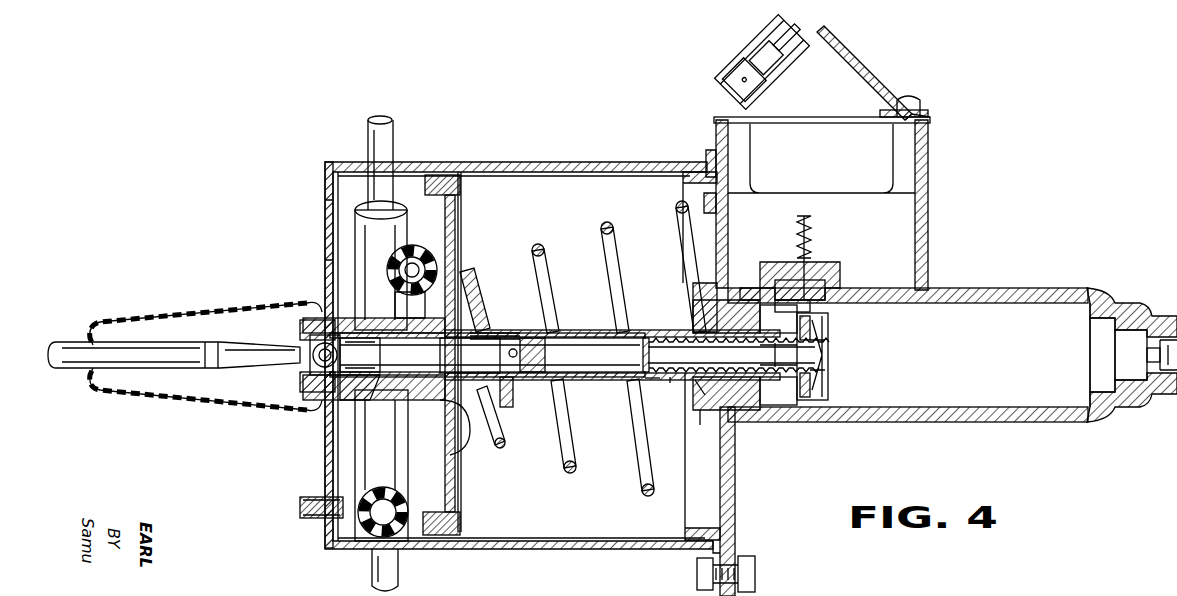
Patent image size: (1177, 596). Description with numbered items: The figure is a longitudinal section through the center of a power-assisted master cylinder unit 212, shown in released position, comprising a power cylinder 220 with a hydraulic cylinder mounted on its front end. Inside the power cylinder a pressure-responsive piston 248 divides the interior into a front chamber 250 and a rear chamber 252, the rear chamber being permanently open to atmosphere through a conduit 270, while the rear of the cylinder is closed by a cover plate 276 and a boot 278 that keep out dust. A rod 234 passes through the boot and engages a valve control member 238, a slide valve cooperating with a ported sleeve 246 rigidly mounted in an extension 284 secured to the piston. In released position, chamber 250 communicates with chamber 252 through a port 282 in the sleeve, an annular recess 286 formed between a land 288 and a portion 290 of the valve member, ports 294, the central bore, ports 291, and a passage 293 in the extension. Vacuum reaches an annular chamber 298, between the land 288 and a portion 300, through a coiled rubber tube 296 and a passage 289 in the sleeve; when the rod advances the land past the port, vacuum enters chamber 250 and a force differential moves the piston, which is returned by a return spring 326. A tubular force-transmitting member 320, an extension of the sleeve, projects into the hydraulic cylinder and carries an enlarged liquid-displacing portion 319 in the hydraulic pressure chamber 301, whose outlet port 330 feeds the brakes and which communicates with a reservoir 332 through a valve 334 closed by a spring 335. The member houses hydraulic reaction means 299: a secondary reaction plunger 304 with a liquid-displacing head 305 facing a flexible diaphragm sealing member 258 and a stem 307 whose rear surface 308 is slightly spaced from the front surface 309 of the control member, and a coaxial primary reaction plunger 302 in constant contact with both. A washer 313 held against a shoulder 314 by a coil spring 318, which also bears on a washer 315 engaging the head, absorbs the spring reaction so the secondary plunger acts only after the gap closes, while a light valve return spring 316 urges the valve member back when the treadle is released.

The power-assisted master cylinder unit 212 is at (560, 554).
The power cylinder 220 is at (535, 165).
The rod 234 is at (68, 352).
The valve control member 238 is at (338, 402).
The ported sleeve 246 is at (345, 430).
The piston 248 is at (462, 195).
The chamber 250 is at (588, 167).
The chamber 252 is at (405, 545).
The flexible diaphragm sealing member 258 is at (820, 336).
The conduit 270 is at (378, 572).
The cover plate 276 is at (325, 222).
The boot 278 is at (197, 318).
The port 282 is at (492, 338).
The extension 284 is at (445, 440).
The annular recess 286 is at (488, 345).
The land 288 is at (495, 332).
The passage 289 is at (440, 462).
The portion 290 is at (535, 382).
The ports 291 is at (372, 312).
The passage 293 is at (340, 395).
The ports 294 is at (520, 385).
The coiled rubber tube 296 is at (365, 240).
The annular chamber 298 is at (480, 328).
The hydraulic reaction means 299 is at (735, 330).
The portion 300 is at (368, 300).
The hydraulic pressure chamber 301 is at (1000, 318).
The primary reaction plunger 302 is at (640, 350).
The secondary reaction plunger 304 is at (735, 412).
The liquid-displacing head 305 is at (820, 358).
The stem 307 is at (680, 382).
The rear surface 308 is at (657, 345).
The front surface 309 is at (648, 381).
The washer 313 is at (700, 400).
The shoulder 314 is at (690, 332).
The washer 315 is at (793, 368).
The valve return spring 316 is at (668, 343).
The coil spring 318 is at (705, 420).
The liquid-displacing portion 319 is at (822, 380).
The force-transmitting member 320 is at (585, 382).
The return spring 326 is at (612, 243).
The outlet port 330 is at (1133, 341).
The reservoir 332 is at (905, 210).
The valve 334 is at (872, 256).
The spring 335 is at (808, 232).